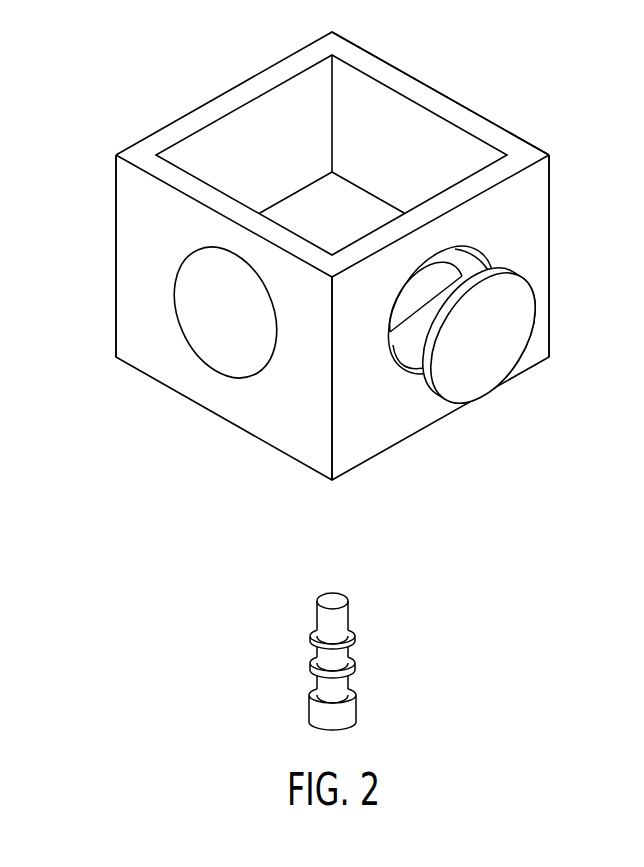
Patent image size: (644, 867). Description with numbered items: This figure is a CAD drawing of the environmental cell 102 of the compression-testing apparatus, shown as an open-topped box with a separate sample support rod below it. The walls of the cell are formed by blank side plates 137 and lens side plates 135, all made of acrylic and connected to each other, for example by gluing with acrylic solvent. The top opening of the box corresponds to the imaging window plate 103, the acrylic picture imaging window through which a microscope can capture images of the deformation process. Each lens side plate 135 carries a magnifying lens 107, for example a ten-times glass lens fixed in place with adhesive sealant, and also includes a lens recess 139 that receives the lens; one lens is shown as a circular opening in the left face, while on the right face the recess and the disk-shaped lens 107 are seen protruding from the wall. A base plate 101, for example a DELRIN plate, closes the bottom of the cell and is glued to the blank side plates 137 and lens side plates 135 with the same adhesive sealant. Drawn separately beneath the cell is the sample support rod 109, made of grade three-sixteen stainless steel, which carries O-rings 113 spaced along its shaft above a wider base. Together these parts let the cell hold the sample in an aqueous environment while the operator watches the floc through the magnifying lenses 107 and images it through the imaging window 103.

The base plate 101 is at (358, 196).
The environmental cell 102 is at (69, 85).
The imaging window plate 103 is at (254, 86).
The magnifying lens 107 is at (533, 306).
The sample support rod 109 is at (357, 716).
The O-rings 113 is at (312, 633).
The lens side plates 135 is at (233, 213).
The blank side plates 137 is at (365, 64).
The lens recesses 139 is at (481, 261).